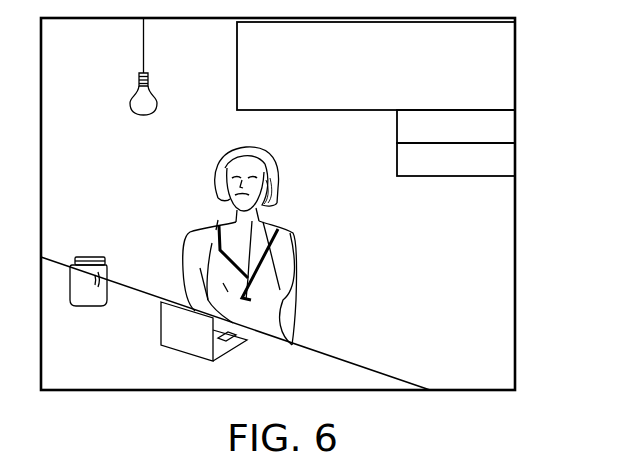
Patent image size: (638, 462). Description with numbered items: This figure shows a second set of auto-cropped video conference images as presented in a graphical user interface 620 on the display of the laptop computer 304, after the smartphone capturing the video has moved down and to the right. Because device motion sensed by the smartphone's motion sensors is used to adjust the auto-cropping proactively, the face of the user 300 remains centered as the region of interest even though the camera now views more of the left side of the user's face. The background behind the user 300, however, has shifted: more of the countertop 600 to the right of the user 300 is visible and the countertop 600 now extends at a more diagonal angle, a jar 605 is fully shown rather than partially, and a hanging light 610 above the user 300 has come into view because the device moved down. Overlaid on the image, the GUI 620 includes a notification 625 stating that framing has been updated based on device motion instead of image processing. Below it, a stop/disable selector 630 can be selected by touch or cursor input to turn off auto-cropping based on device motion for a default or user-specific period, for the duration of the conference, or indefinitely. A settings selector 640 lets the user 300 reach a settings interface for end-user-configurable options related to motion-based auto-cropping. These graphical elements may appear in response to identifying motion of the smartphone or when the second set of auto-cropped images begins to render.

The countertop 600 is at (158, 372).
The hanging light 610 is at (137, 86).
The graphical user interface 620 is at (515, 97).
The indication/notification 625 is at (515, 63).
The stop/disable selector 630 is at (515, 128).
The settings selector 640 is at (515, 162).
The jar 605 is at (88, 257).
The laptop computer 304 is at (160, 332).
The user 300 is at (200, 222).